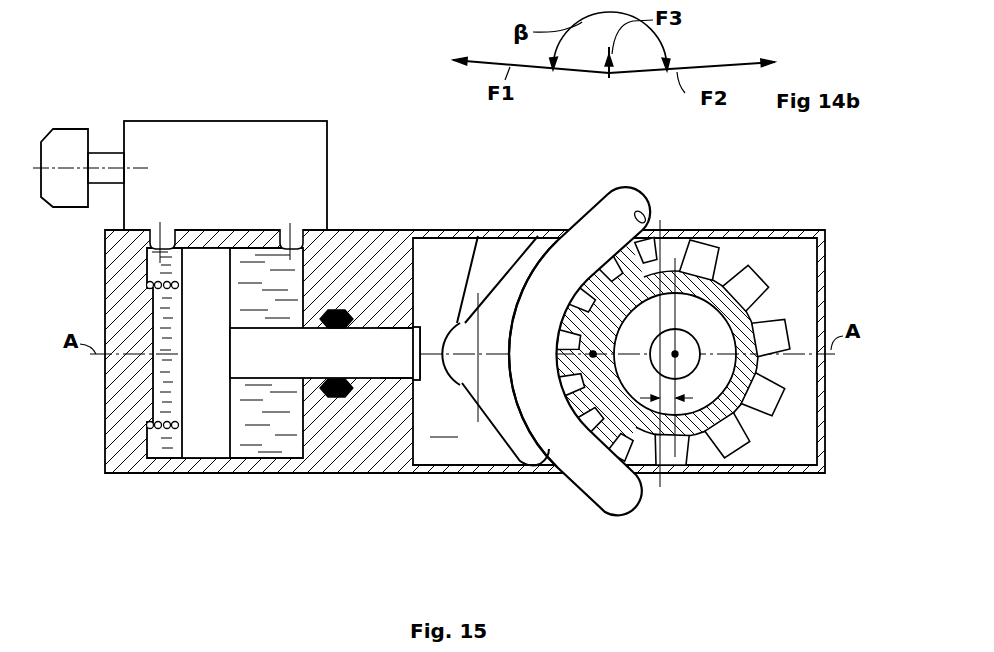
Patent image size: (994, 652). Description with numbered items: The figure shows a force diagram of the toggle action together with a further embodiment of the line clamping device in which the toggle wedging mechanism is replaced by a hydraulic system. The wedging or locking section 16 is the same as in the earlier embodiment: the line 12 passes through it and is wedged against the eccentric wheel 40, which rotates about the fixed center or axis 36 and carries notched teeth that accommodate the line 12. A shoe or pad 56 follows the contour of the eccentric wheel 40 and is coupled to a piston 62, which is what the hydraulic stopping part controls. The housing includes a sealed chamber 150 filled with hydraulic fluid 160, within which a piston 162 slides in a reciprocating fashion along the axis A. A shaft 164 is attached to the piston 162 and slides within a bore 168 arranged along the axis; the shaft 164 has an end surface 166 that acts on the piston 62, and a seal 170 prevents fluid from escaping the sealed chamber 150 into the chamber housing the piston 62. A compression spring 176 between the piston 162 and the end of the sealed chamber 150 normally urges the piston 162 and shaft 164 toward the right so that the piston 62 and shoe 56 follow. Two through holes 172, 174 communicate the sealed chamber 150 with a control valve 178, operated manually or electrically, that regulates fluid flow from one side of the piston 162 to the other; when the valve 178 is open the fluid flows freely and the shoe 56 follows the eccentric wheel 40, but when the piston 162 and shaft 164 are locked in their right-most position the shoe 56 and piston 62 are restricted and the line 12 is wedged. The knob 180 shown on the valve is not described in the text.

The line 12 is at (606, 350).
The wedging or locking section 16 is at (712, 391).
The center or axis of rotation 36 is at (679, 350).
The eccentric wheel 40 is at (740, 417).
The shoe or pad 56 is at (528, 262).
The piston 62 is at (447, 258).
The sealed chamber 150 is at (243, 448).
The hydraulic fluid 160 is at (283, 435).
The piston 162 is at (200, 440).
The shaft 164 is at (377, 352).
The end surface 166 is at (425, 370).
The bore 168 is at (383, 374).
The seal 170 is at (338, 312).
The through hole 172 is at (158, 236).
The through hole 174 is at (294, 233).
The compression spring 176 is at (150, 440).
The control valve 178 is at (205, 138).
The adjustment knob 180 is at (68, 140).